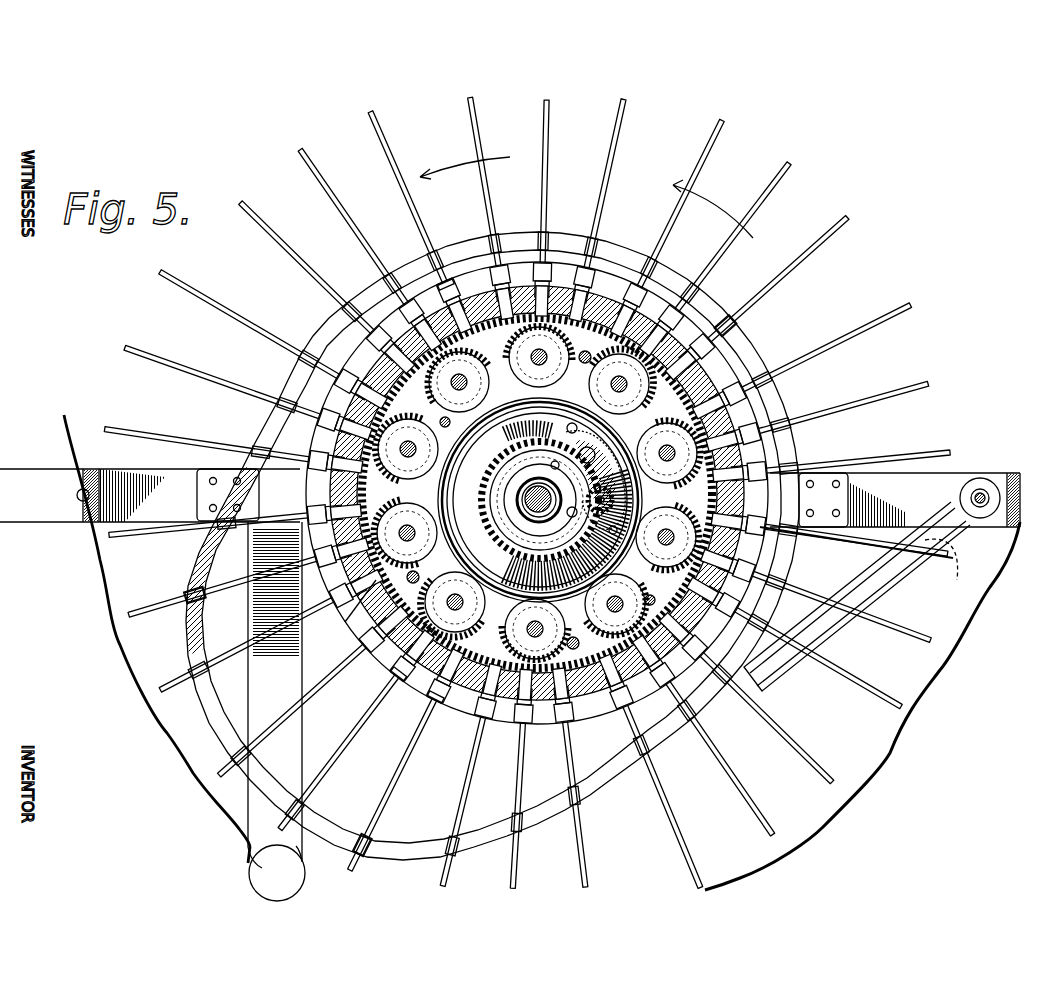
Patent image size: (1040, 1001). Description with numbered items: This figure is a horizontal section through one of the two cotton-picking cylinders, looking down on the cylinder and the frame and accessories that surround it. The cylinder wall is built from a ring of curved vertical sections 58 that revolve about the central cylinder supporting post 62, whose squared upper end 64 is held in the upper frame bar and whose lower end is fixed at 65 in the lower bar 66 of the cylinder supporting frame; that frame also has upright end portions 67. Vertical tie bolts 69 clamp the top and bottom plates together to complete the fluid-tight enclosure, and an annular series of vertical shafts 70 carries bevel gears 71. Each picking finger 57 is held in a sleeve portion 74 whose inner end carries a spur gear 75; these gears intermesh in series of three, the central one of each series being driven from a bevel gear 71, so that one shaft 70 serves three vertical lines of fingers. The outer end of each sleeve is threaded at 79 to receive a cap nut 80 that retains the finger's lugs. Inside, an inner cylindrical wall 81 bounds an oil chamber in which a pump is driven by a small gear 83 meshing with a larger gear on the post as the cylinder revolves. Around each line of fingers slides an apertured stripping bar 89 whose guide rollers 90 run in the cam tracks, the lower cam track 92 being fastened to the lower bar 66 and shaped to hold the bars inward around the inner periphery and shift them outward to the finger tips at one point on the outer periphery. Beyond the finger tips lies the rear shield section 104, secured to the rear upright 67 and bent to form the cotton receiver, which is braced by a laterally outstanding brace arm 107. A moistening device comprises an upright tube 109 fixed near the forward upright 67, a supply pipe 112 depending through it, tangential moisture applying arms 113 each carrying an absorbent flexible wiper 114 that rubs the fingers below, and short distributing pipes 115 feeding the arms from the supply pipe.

The picking fingers 57 is at (786, 279).
The vertical sections 58 is at (604, 308).
The cylinder supporting post 62 is at (536, 486).
The squared upper end 64 is at (500, 497).
The lower end fixing 65 is at (613, 461).
The lower bar 66 is at (22, 523).
The upright end portions 67 is at (86, 523).
The vertical tie bolts 69 is at (563, 630).
The vertical shafts 70 is at (604, 390).
The bevel gears 71 is at (484, 413).
The sleeve portions 74 is at (456, 290).
The spur gears 75 is at (351, 611).
The externally threaded outer end 79 is at (412, 690).
The cap nut 80 is at (412, 300).
The inner cylindrical wall 81 is at (510, 545).
The small gear 83 is at (614, 494).
The stripping bar 89 is at (729, 314).
The guide rollers 90 is at (688, 282).
The lower cam track 92 is at (636, 247).
The rear shield section 104 is at (132, 655).
The brace arm 107 is at (304, 738).
The upright tube 109 is at (969, 478).
The supply pipe 112 is at (983, 493).
The moisture applying arms 113 is at (835, 638).
The flexible wiper 114 is at (832, 597).
The distributing pipes 115 is at (953, 566).